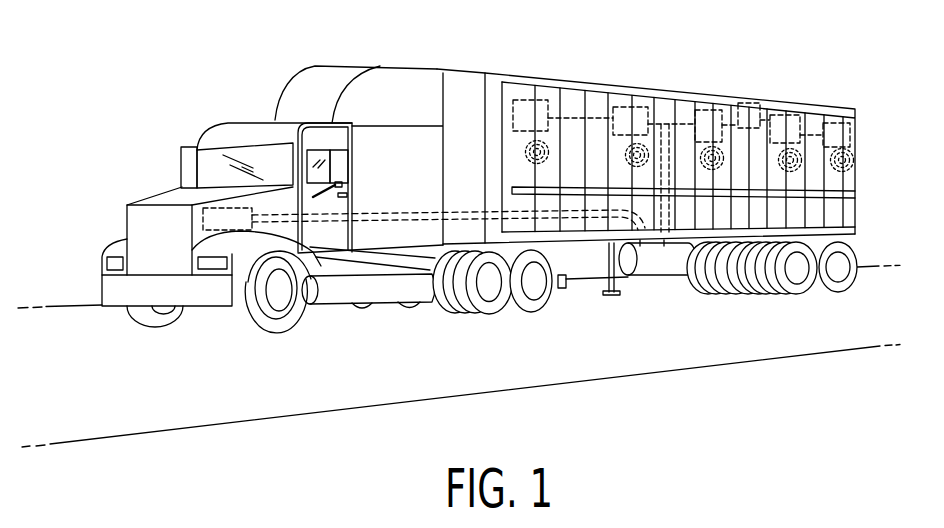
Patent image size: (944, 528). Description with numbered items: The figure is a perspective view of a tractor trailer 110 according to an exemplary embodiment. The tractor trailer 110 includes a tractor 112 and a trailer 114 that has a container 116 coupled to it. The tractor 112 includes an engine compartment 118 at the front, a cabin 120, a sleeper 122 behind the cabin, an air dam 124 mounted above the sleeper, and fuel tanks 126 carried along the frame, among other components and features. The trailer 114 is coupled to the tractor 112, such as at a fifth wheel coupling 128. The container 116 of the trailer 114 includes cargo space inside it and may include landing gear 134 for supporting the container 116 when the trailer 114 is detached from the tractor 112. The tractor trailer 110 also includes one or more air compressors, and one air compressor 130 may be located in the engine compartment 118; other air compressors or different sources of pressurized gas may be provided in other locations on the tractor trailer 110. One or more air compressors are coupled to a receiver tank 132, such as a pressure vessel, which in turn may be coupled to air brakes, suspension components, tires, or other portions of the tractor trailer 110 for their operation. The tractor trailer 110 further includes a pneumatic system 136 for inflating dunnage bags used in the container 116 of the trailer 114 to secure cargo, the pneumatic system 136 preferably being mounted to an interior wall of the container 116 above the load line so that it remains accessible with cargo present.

The tractor trailer 110 is at (99, 108).
The tractor 112 is at (88, 286).
The trailer 114 is at (720, 234).
The container 116 is at (755, 134).
The engine compartment 118 is at (162, 198).
The cabin 120 is at (213, 160).
The sleeper 122 is at (432, 150).
The air dam 124 is at (390, 88).
The fuel tanks 126 is at (340, 304).
The fifth wheel coupling 128 is at (500, 356).
The air compressor 130 is at (232, 226).
The receiver tank 132 is at (650, 270).
The landing gear 134 is at (612, 294).
The pneumatic system 136 is at (737, 95).